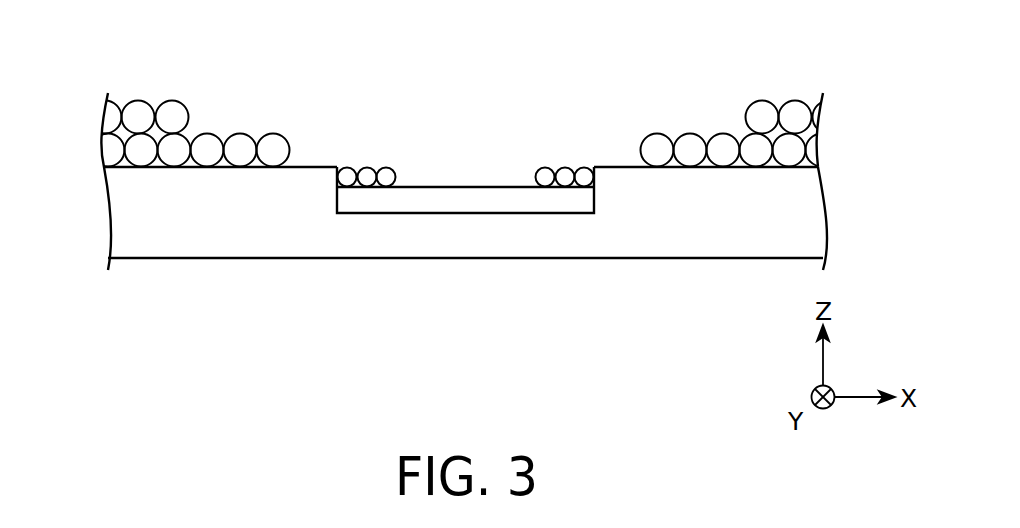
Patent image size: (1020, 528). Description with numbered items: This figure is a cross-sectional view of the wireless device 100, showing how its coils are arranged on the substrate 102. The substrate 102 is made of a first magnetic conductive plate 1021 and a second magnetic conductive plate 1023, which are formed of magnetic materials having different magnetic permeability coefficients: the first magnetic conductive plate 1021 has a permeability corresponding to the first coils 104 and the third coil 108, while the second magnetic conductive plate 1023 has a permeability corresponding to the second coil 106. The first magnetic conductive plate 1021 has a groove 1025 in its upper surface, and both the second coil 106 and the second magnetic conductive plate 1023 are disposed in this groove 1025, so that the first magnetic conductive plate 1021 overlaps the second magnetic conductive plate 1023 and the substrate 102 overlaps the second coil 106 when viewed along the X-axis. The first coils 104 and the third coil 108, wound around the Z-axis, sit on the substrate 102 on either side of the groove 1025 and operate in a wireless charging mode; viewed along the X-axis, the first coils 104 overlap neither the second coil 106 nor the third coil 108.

The wireless device 100 is at (73, 40).
The substrate 102 is at (688, 322).
The first magnetic conductive plate 1021 is at (660, 218).
The second magnetic conductive plate 1023 is at (570, 202).
The groove 1025 is at (588, 178).
The first coils 104 is at (207, 147).
The second coil 106 is at (365, 175).
The third coil 108 is at (137, 110).